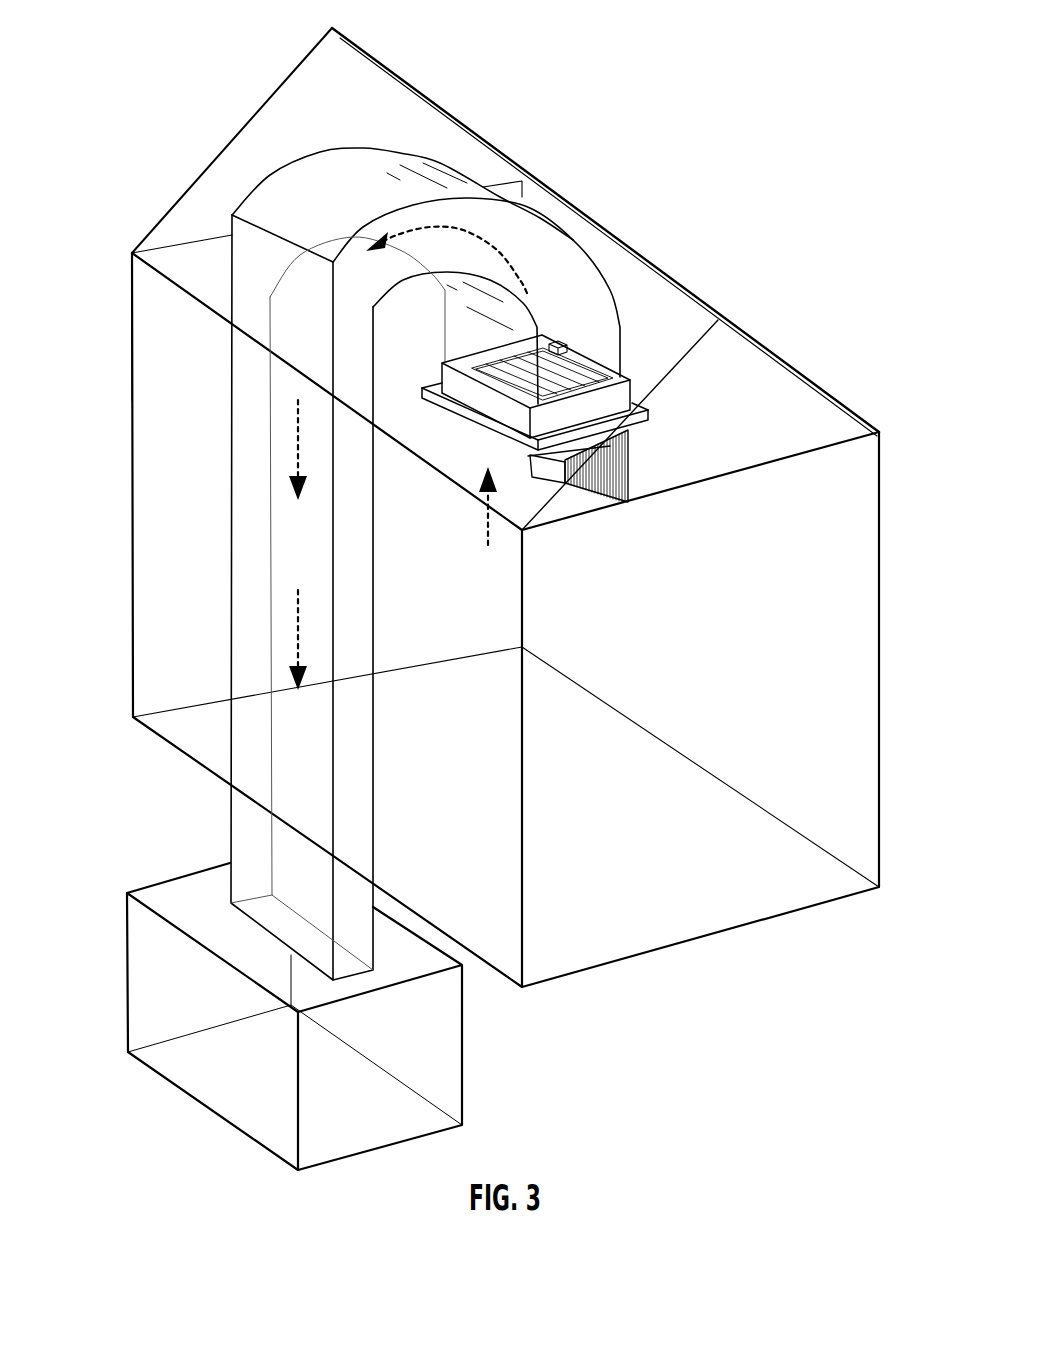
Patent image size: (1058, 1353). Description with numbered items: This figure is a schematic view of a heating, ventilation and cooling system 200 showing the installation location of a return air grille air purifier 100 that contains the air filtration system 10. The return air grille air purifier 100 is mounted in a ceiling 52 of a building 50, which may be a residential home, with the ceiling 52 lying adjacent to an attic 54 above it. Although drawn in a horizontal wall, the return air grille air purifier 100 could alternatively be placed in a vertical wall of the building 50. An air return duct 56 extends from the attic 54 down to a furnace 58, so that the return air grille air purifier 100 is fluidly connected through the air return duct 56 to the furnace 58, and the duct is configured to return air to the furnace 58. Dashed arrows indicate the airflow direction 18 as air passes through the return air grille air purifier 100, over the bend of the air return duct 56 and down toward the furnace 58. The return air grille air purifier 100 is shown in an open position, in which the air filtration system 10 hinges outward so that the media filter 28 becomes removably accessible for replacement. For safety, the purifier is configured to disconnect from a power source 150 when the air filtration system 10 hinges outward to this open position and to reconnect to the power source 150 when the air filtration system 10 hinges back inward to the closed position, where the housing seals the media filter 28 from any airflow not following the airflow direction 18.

The heating, ventilation and cooling system 200 is at (75, 219).
The building 50 is at (730, 930).
The ceiling 52 is at (800, 457).
The attic 54 is at (196, 212).
The air return duct 56 is at (397, 150).
The airflow direction 18 is at (450, 230).
The return air grille air purifier 100 is at (434, 428).
The power source 150 is at (557, 347).
The air filtration system 10 is at (555, 466).
The media filter 28 is at (580, 463).
The furnace 58 is at (177, 883).